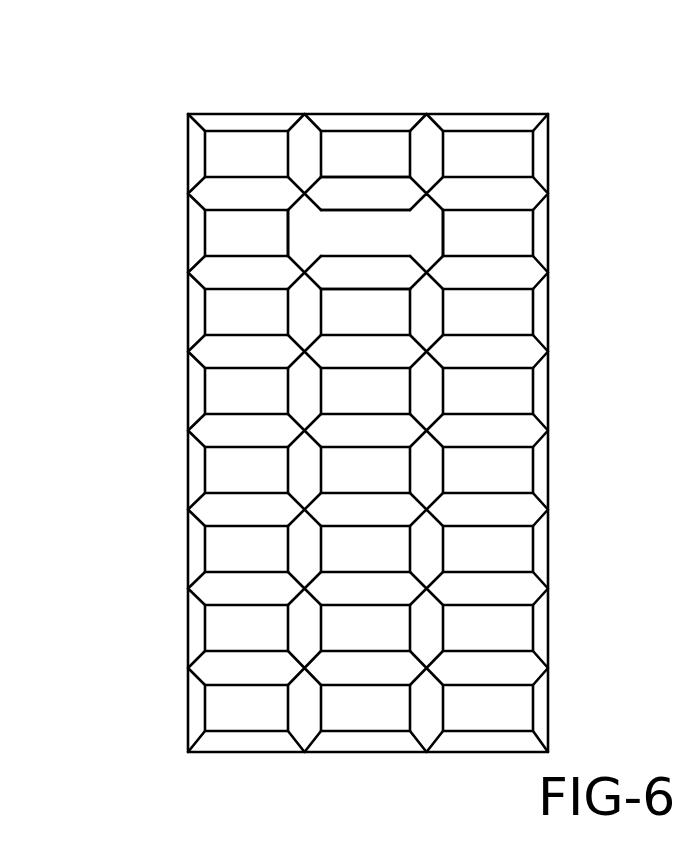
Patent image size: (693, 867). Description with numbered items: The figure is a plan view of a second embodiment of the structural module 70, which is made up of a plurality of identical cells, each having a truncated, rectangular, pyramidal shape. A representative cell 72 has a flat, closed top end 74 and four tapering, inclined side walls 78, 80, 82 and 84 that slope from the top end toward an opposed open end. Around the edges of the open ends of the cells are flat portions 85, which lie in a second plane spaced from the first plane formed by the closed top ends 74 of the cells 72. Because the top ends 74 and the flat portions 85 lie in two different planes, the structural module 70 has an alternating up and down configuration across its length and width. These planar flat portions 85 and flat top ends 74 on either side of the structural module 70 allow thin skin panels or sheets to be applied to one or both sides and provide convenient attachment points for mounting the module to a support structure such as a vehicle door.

The structural module 70 is at (175, 285).
The cell 72 is at (327, 200).
The flat top end 74 is at (355, 235).
The inclined side wall 78 is at (400, 197).
The inclined side wall 80 is at (437, 243).
The inclined side wall 82 is at (395, 275).
The inclined side wall 84 is at (303, 220).
The flat portion 85 is at (233, 242).